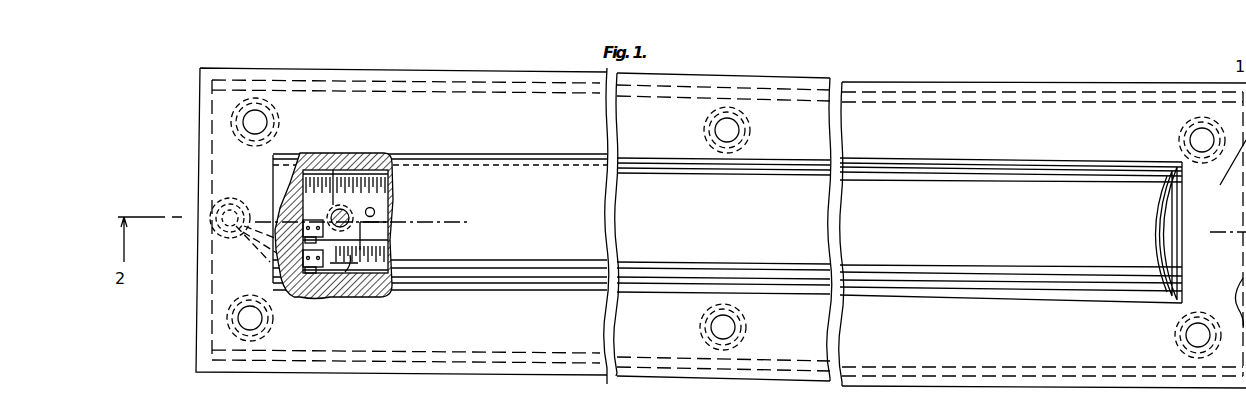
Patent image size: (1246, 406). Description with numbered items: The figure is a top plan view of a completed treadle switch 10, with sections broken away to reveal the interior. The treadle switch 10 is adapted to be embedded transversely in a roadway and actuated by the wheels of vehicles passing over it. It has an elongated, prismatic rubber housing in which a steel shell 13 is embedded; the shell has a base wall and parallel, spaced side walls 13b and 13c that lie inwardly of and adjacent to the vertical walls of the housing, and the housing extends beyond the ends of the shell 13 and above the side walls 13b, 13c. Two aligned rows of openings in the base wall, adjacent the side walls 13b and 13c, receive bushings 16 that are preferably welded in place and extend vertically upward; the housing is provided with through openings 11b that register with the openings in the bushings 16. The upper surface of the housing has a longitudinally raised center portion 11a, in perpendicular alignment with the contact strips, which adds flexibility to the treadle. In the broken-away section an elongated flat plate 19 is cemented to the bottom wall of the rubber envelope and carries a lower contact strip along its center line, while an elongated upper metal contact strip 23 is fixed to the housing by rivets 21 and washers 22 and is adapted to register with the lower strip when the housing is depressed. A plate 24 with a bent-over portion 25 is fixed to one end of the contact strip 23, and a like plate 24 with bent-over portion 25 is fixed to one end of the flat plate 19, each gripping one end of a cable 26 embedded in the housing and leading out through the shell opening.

The treadle switch 10 is at (1147, 65).
The raised center portion 11a is at (1015, 182).
The through openings 11b is at (255, 122).
The steel shell 13 is at (222, 166).
The side wall 13b is at (345, 82).
The side wall 13c is at (412, 357).
The bushings 16 is at (270, 122).
The flat plate 19 is at (372, 295).
The rivets 21 is at (343, 208).
The washers 22 is at (353, 210).
The contact strip 23 is at (320, 205).
The plate 24 is at (322, 292).
The bent-over portion 25 is at (298, 294).
The cable 26 is at (262, 255).